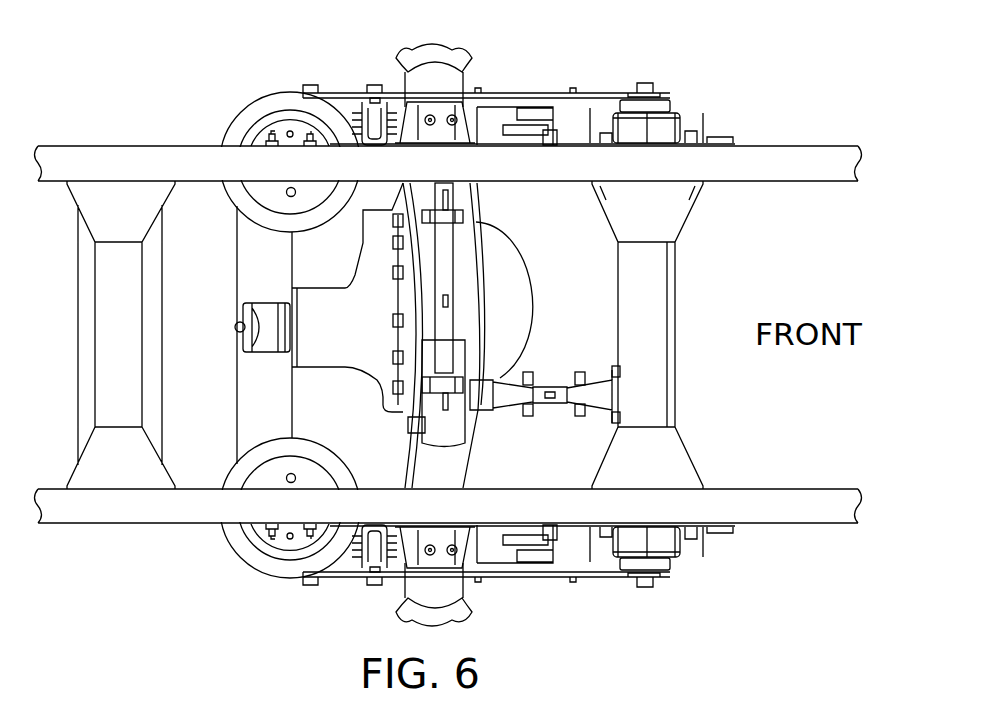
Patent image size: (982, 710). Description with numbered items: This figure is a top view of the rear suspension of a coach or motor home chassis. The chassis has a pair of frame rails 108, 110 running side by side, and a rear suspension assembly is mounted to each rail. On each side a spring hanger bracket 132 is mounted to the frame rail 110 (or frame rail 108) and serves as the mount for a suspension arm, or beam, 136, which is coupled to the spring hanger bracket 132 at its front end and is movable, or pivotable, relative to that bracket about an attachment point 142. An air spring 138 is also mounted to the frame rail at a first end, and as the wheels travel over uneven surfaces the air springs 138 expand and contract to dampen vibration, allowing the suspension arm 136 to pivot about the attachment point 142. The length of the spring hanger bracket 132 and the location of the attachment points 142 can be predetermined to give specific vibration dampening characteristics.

The frame rail 108 is at (810, 498).
The frame rail 110 is at (785, 166).
The spring hanger bracket 132 is at (688, 105).
The suspension arm 136 is at (562, 82).
The air spring 138 is at (277, 102).
The attachment point 142 is at (650, 82).